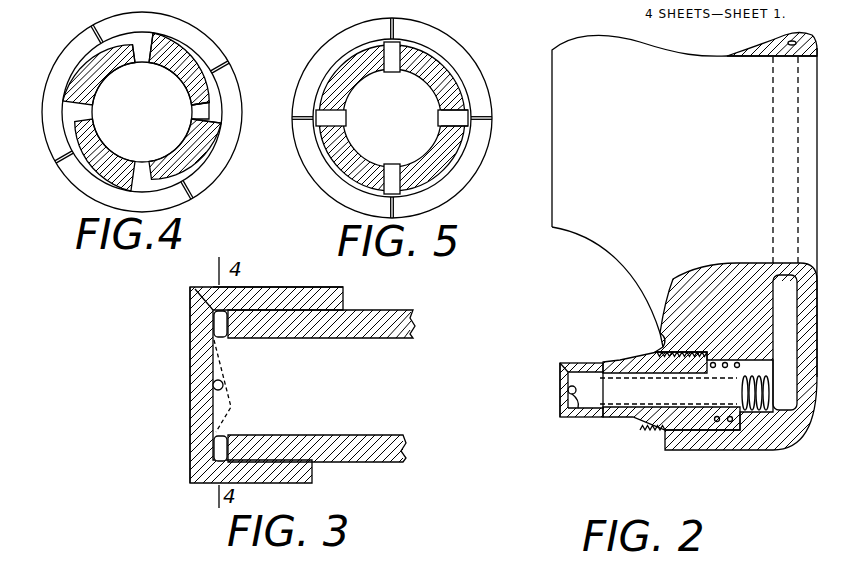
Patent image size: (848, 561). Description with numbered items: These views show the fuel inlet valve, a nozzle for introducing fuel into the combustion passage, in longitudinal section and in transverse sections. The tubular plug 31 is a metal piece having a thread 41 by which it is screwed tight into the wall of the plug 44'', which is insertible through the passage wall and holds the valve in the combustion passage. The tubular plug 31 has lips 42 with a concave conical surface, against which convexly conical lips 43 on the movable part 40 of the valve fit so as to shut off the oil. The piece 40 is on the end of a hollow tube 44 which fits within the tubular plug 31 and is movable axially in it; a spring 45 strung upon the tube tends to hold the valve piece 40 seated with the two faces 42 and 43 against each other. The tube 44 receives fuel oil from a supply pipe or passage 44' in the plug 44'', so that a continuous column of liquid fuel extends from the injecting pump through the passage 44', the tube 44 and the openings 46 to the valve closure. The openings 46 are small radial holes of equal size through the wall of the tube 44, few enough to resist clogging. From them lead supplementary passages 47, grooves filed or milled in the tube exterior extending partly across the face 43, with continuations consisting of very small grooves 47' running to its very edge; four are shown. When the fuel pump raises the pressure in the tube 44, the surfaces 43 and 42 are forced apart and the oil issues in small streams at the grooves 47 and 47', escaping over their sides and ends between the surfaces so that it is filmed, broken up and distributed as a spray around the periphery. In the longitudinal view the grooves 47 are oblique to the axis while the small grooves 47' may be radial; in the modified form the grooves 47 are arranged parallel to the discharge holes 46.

In FIG. 3, the tubular plug 31 is at (327, 289).
In FIG. 2, the tubular plug 31 is at (617, 360).
In FIG. 4, the movable part of the valve 40 is at (200, 31).
In FIG. 5, the movable part of the valve 40 is at (468, 68).
In FIG. 3, the movable part of the valve 40 is at (190, 414).
In FIG. 2, the movable part of the valve 40 is at (560, 399).
In FIG. 2, the thread 41 is at (666, 334).
In FIG. 3, the lips 42 is at (207, 286).
In FIG. 2, the lips 42 is at (565, 362).
In FIG. 4, the convexly conical lips 43 is at (210, 50).
In FIG. 5, the convexly conical lips 43 is at (465, 167).
In FIG. 3, the convexly conical lips 43 is at (190, 306).
In FIG. 2, the convexly conical lips 43 is at (560, 371).
In FIG. 4, the tube 44 is at (142, 112).
In FIG. 5, the tube 44 is at (392, 118).
In FIG. 3, the tube 44 is at (327, 377).
In FIG. 2, the tube 44 is at (670, 404).
In FIG. 2, the supply pipe or passage 44' is at (764, 308).
In FIG. 2, the plug 44'' is at (684, 205).
In FIG. 2, the spring 45 is at (708, 410).
In FIG. 4, the openings 46 is at (205, 115).
In FIG. 5, the openings 46 is at (447, 118).
In FIG. 3, the openings 46 is at (224, 384).
In FIG. 2, the openings 46 is at (574, 417).
In FIG. 4, the supplementary passages 47 is at (201, 66).
In FIG. 5, the supplementary passages 47 is at (477, 131).
In FIG. 3, the supplementary passages 47 is at (240, 400).
In FIG. 4, the very small grooves 47' is at (232, 92).
In FIG. 5, the very small grooves 47' is at (482, 107).
In FIG. 3, the very small grooves 47' is at (185, 338).